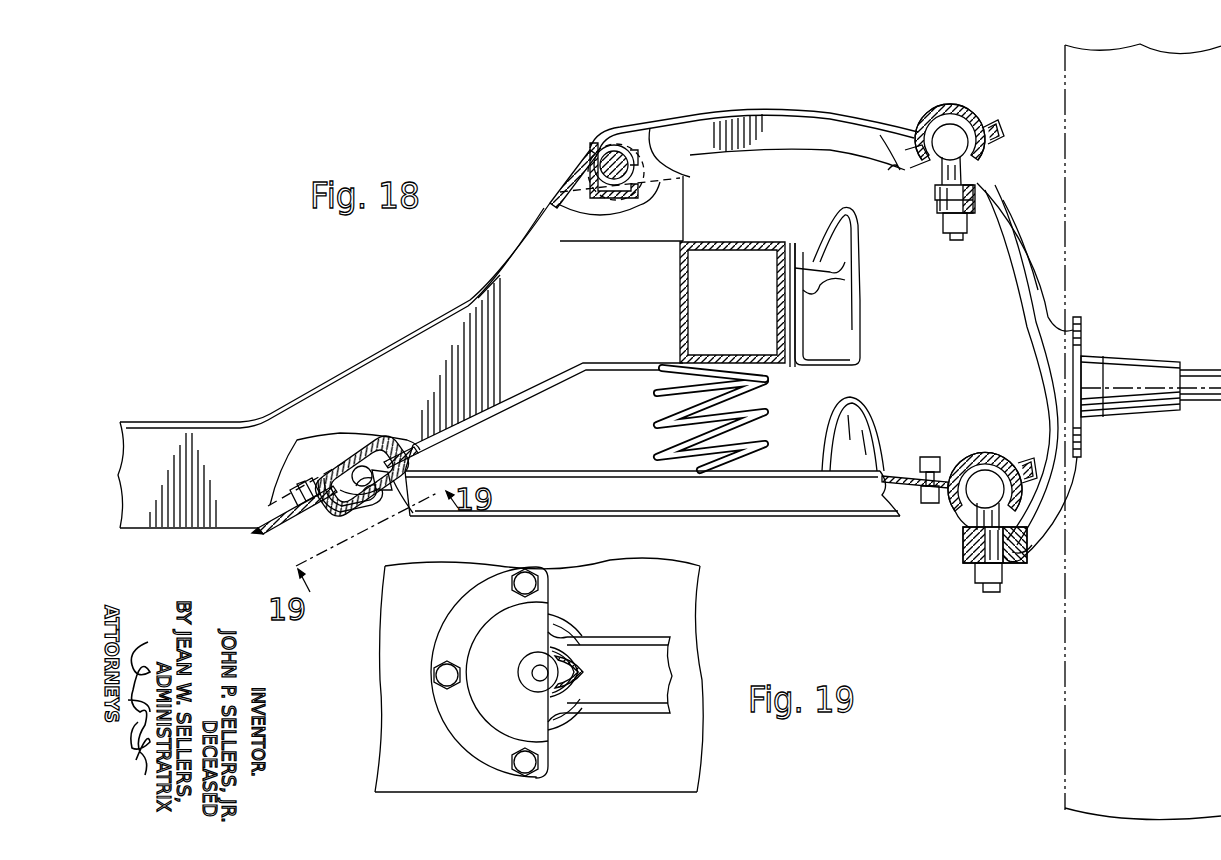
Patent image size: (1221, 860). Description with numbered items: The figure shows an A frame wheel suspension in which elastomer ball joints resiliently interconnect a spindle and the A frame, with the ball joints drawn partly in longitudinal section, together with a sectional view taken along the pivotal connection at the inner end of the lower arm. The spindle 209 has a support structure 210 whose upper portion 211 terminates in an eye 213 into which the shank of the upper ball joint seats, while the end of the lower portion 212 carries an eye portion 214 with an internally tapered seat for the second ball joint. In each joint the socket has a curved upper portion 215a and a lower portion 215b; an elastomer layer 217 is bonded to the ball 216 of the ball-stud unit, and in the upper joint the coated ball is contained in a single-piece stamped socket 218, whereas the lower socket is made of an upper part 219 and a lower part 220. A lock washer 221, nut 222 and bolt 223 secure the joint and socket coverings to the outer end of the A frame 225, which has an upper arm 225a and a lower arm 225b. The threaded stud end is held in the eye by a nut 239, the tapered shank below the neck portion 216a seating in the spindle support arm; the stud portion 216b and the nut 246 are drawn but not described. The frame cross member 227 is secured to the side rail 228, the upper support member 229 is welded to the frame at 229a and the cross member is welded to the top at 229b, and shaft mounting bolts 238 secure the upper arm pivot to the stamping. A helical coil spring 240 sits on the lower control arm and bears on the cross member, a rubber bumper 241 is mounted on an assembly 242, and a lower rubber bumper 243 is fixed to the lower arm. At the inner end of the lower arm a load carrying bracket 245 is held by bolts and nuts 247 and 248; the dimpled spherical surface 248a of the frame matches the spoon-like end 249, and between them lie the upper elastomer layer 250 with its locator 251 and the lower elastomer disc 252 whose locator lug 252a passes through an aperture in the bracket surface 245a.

In FIG. 18, the spindle 209 is at (1140, 350).
In FIG. 18, the support structure 210 is at (1076, 318).
In FIG. 18, the upper portion 211 is at (1014, 218).
In FIG. 18, the lower portion 212 is at (1036, 541).
In FIG. 18, the eye 213 is at (935, 215).
In FIG. 18, the eye portion 214 is at (975, 567).
In FIG. 18, the upper portion of the socket 215a is at (942, 100).
In FIG. 18, the lower portion of the socket 215b is at (955, 516).
In FIG. 18, the ball 216 is at (937, 138).
In FIG. 19, the ball 216 is at (434, 674).
In FIG. 18, the neck portion 216a is at (942, 174).
In FIG. 18, the lower ball stud 216b is at (972, 541).
In FIG. 18, the elastomer layer 217 is at (972, 112).
In FIG. 18, the stamped socket 218 is at (935, 108).
In FIG. 18, the upper part of socket 219 is at (966, 455).
In FIG. 18, the lower part of socket 220 is at (1024, 493).
In FIG. 18, the lock washer 221 is at (912, 480).
In FIG. 18, the nut 222 is at (920, 466).
In FIG. 18, the bolt 223 is at (932, 457).
In FIG. 18, the A frame 225 is at (640, 518).
In FIG. 19, the A frame 225 is at (646, 716).
In FIG. 18, the upper arm 225a is at (758, 106).
In FIG. 18, the lower arm 225b is at (784, 521).
In FIG. 19, the lower arm 225b is at (598, 716).
In FIG. 18, the frame member 227 is at (420, 330).
In FIG. 18, the side rail 228 is at (690, 327).
In FIG. 18, the upper support member 229 is at (560, 172).
In FIG. 18, the weld 229a is at (684, 241).
In FIG. 18, the weld 229b is at (512, 250).
In FIG. 18, the shaft mounting bolts 238 is at (628, 155).
In FIG. 18, the nut 239 is at (955, 236).
In FIG. 18, the helical coil spring 240 is at (662, 400).
In FIG. 18, the rubber bumper 241 is at (850, 272).
In FIG. 18, the assembly 242 is at (866, 335).
In FIG. 18, the lower rubber bumper 243 is at (858, 418).
In FIG. 18, the load carrying bracket 245 is at (380, 503).
In FIG. 19, the load carrying bracket 245 is at (458, 742).
In FIG. 18, the surface of the bracket 245a is at (372, 497).
In FIG. 19, the surface of the bracket 245a is at (583, 673).
In FIG. 18, the pivot bolt nut 246 is at (298, 521).
In FIG. 19, the bolts and nuts 247 is at (518, 580).
In FIG. 18, the bolts and nuts 248 is at (262, 521).
In FIG. 18, the spherical surface 248a is at (390, 455).
In FIG. 18, the spoon-like end 249 is at (416, 455).
In FIG. 18, the upper elastomer layer 250 is at (345, 458).
In FIG. 19, the upper elastomer layer 250 is at (570, 632).
In FIG. 18, the locator 251 is at (360, 455).
In FIG. 18, the lower elastomer layer 252 is at (378, 500).
In FIG. 19, the lower elastomer layer 252 is at (575, 661).
In FIG. 18, the locator lug 252a is at (382, 505).